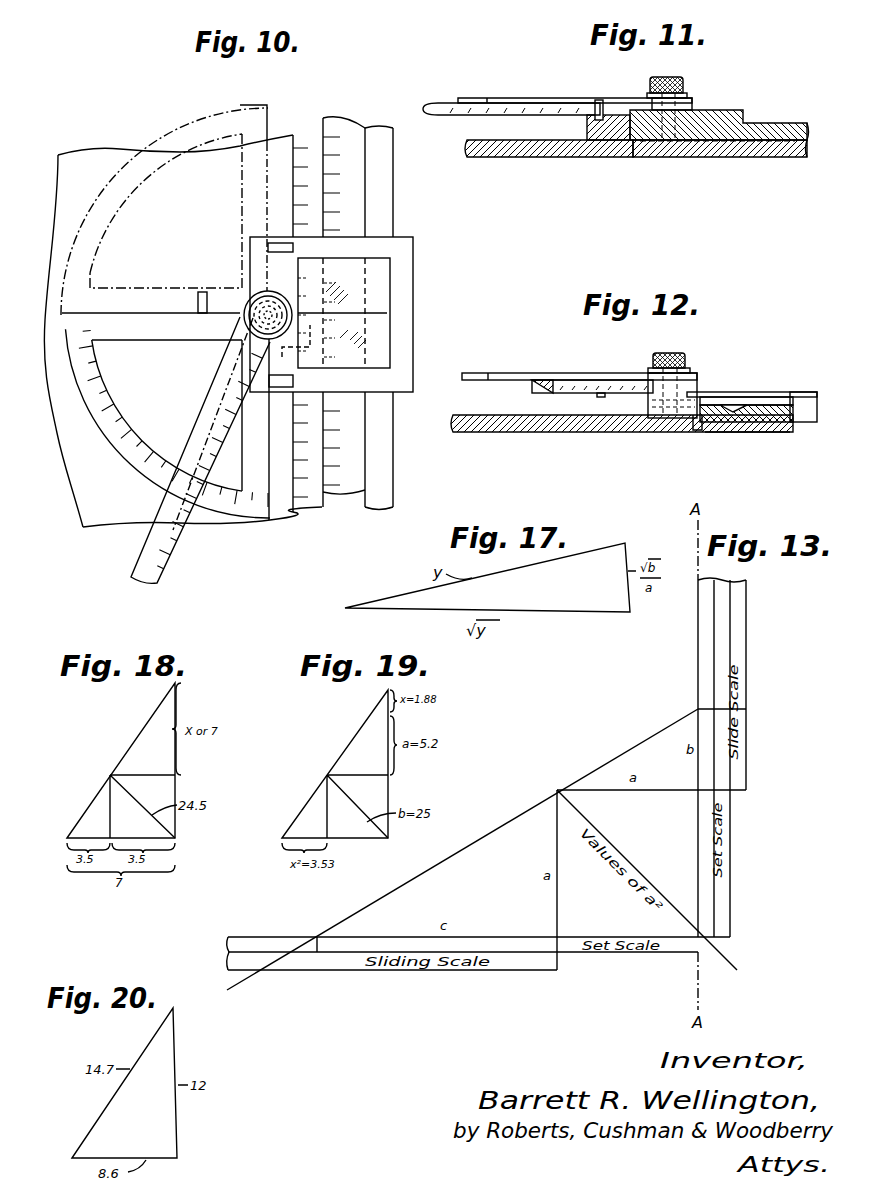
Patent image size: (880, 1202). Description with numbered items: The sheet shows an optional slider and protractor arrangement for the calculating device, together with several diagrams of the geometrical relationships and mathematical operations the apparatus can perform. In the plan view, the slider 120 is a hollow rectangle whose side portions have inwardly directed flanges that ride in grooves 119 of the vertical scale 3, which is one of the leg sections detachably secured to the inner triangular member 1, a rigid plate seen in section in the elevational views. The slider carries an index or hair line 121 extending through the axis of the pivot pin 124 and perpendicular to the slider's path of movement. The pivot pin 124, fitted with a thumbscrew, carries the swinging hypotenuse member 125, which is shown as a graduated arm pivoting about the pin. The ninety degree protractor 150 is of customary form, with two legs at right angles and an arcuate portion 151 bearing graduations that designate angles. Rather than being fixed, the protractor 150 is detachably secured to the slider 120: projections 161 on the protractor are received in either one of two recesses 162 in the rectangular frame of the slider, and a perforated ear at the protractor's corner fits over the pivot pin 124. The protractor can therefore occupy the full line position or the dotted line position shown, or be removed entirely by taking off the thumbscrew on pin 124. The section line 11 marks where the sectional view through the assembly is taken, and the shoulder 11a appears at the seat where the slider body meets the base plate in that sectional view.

In FIG. 12, the inner triangular member 1 is at (587, 430).
In FIG. 12, the leg or scale section 3 is at (742, 430).
In FIG. 10, the section line 11- 11 is at (278, 80).
In FIG. 12, the shoulder of slide seat 11a is at (702, 430).
In FIG. 12, the grooves 119 is at (792, 422).
In FIG. 10, the slider 120 is at (416, 246).
In FIG. 11, the slider 120 is at (743, 110).
In FIG. 12, the slider 120 is at (737, 392).
In FIG. 10, the index or hair line 121 is at (375, 312).
In FIG. 10, the pivot pin 124 is at (250, 305).
In FIG. 11, the pivot pin 124 is at (687, 83).
In FIG. 12, the pivot pin 124 is at (687, 357).
In FIG. 10, the swinging hypotenuse member 125 is at (210, 401).
In FIG. 11, the swinging hypotenuse member 125 is at (445, 103).
In FIG. 10, the 90° protractor 150 is at (138, 482).
In FIG. 11, the 90° protractor 150 is at (510, 92).
In FIG. 12, the 90° protractor 150 is at (533, 369).
In FIG. 10, the arcuate portion 151 is at (102, 437).
In FIG. 10, the projections 161 is at (198, 304).
In FIG. 11, the projections 161 is at (623, 82).
In FIG. 12, the projections 161 is at (598, 397).
In FIG. 10, the recesses 162 is at (278, 243).